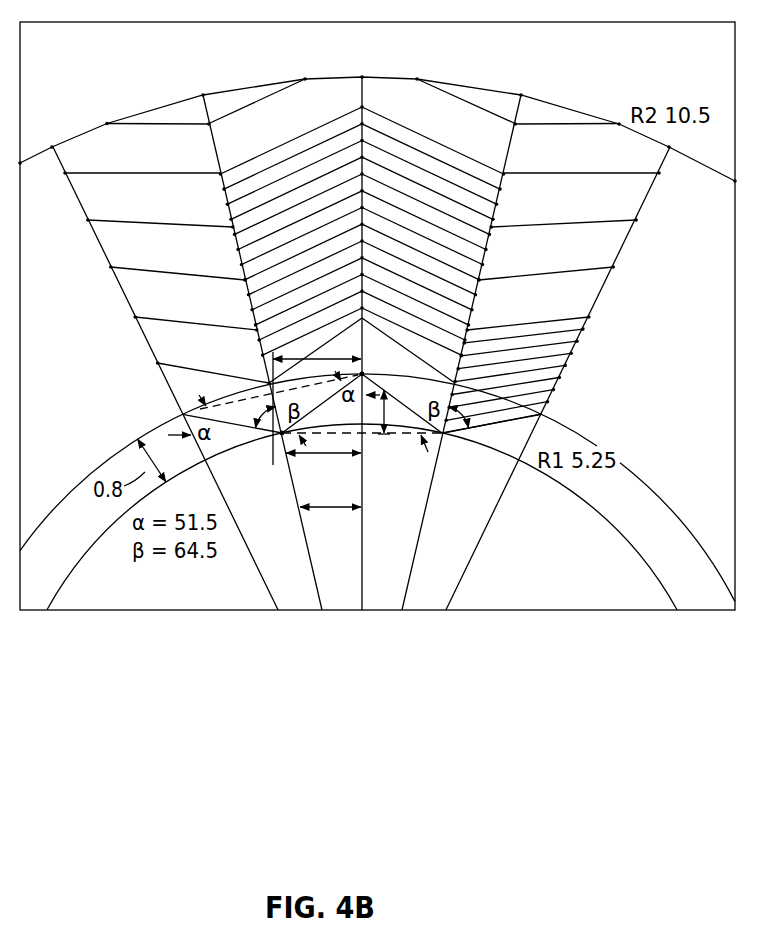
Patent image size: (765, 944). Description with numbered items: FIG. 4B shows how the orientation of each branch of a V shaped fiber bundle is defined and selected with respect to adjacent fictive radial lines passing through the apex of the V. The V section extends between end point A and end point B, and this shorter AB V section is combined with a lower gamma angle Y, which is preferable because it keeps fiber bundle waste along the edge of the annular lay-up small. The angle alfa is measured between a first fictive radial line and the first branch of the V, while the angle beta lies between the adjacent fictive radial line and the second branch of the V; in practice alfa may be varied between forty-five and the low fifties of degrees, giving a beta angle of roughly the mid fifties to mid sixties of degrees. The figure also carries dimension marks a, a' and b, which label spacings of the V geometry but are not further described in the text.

The V section end point A is at (369, 362).
The V section end point B is at (266, 439).
The horizontal distance a is at (323, 472).
The horizontal distance a' is at (317, 381).
The vertical distance b is at (386, 405).
The gamma angle Y is at (330, 510).